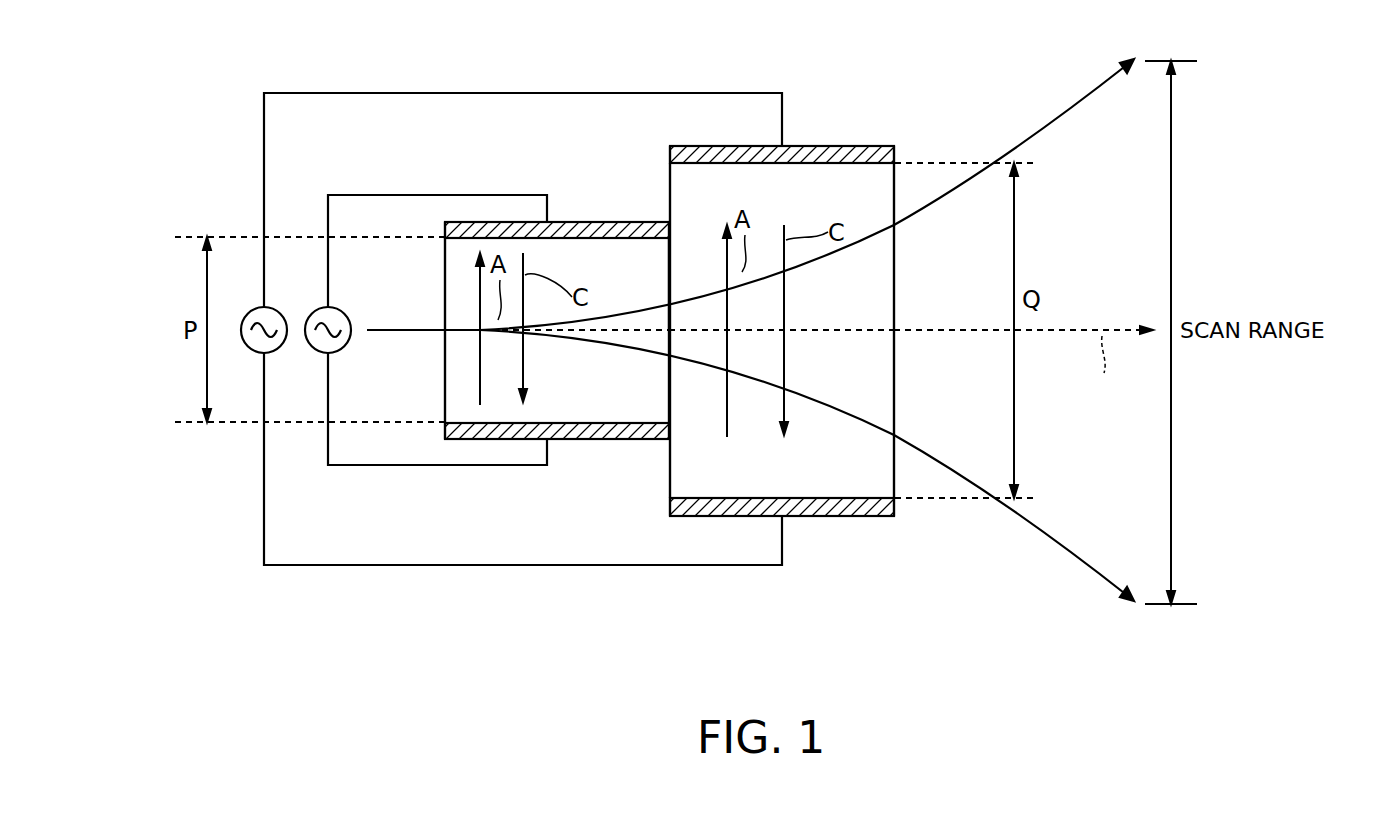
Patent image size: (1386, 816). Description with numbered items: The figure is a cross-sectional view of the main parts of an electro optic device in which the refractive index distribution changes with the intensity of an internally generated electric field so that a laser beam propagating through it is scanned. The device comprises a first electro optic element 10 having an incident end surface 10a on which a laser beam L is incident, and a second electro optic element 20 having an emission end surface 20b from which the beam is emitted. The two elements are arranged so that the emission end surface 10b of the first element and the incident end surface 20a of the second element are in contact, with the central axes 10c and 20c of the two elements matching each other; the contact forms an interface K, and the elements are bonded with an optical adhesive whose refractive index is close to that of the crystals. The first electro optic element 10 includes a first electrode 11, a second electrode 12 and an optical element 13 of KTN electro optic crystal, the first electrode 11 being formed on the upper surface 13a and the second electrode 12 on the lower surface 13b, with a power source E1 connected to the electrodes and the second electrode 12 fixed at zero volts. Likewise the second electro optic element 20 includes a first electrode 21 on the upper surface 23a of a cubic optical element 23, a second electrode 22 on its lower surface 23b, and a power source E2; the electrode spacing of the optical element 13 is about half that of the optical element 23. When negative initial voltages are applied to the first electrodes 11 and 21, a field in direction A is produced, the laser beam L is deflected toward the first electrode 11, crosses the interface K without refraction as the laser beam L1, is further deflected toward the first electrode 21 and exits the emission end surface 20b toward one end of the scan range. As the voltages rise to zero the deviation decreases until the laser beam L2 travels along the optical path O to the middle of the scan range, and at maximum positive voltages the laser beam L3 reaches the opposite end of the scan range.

The first electro optic element 10 is at (606, 190).
The incident end surface 10a is at (445, 405).
The emission end surface 10b is at (673, 413).
The central axis 10c is at (608, 336).
The first electrode 11 is at (636, 222).
The second electrode 12 is at (565, 443).
The optical element 13 is at (445, 252).
The upper surface 13a is at (575, 222).
The lower surface 13b is at (612, 443).
The second electro optic element 20 is at (884, 120).
The incident end surface 20a is at (670, 478).
The emission end surface 20b is at (896, 488).
The central axis 20c is at (845, 336).
The first electrode 21 is at (805, 155).
The second electrode 22 is at (878, 520).
The optical element 23 is at (897, 258).
The upper surface 23a is at (852, 155).
The lower surface 23b is at (818, 520).
The power source E1 is at (306, 326).
The power source E2 is at (282, 352).
The interface K is at (672, 252).
The laser beam L is at (402, 328).
The laser beam L1 is at (1056, 117).
The laser beam L2 is at (1047, 336).
The laser beam L3 is at (1057, 547).
The optical path O is at (1102, 370).